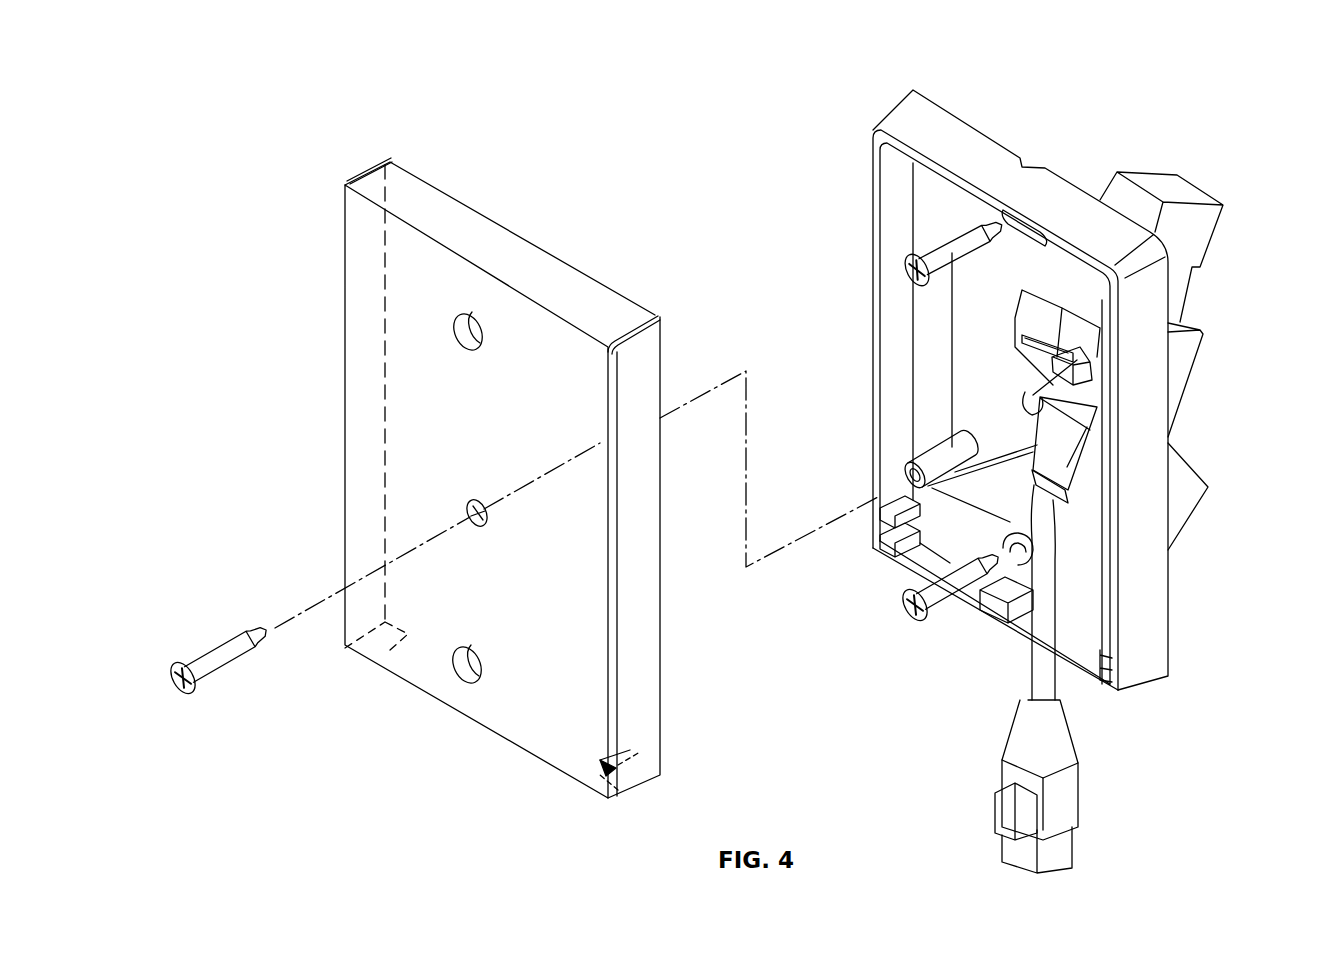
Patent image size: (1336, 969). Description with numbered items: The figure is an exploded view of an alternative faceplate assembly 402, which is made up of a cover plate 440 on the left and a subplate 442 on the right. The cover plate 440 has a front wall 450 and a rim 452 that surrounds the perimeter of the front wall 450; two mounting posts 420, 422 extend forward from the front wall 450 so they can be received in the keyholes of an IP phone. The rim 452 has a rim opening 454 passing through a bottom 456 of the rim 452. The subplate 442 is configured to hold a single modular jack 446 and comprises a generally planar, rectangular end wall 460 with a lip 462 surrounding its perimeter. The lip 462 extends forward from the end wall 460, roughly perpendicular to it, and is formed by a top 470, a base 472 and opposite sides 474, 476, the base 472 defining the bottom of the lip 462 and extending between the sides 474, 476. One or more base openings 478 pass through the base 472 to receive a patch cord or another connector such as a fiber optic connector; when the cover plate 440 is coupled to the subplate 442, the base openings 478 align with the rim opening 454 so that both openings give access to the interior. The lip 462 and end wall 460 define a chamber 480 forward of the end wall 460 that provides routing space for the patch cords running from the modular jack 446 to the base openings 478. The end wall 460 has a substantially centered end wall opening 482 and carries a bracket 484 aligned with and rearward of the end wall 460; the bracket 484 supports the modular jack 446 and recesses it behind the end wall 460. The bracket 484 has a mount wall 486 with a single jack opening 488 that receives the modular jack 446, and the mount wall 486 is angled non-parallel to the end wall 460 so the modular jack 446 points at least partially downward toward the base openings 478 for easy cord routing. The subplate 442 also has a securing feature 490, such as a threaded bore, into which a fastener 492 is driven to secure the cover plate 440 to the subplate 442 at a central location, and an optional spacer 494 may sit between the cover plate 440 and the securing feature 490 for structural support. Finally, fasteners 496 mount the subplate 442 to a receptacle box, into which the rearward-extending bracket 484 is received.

The faceplate assembly 402 is at (293, 105).
The mounting post 420 is at (462, 318).
The mounting post 422 is at (462, 676).
The cover plate 440 is at (468, 459).
The subplate 442 is at (1142, 515).
The modular jack 446 is at (1213, 214).
The front wall 450 is at (405, 320).
The rim 452 is at (431, 193).
The rim opening 454 is at (640, 765).
The bottom 456 is at (641, 790).
The end wall 460 is at (1012, 595).
The lip 462 is at (1160, 656).
The top 470 is at (1012, 390).
The base 472 is at (1065, 622).
The side 474 is at (1160, 627).
The side 476 is at (905, 180).
The base opening 478 is at (915, 555).
The chamber 480 is at (905, 228).
The end wall opening 482 is at (998, 292).
The bracket 484 is at (1190, 342).
The mount wall 486 is at (1037, 313).
The jack opening 488 is at (1178, 326).
The securing feature 490 is at (1030, 392).
The fastener 492 is at (216, 655).
The spacer 494 is at (940, 455).
The fastener 496 is at (952, 290).